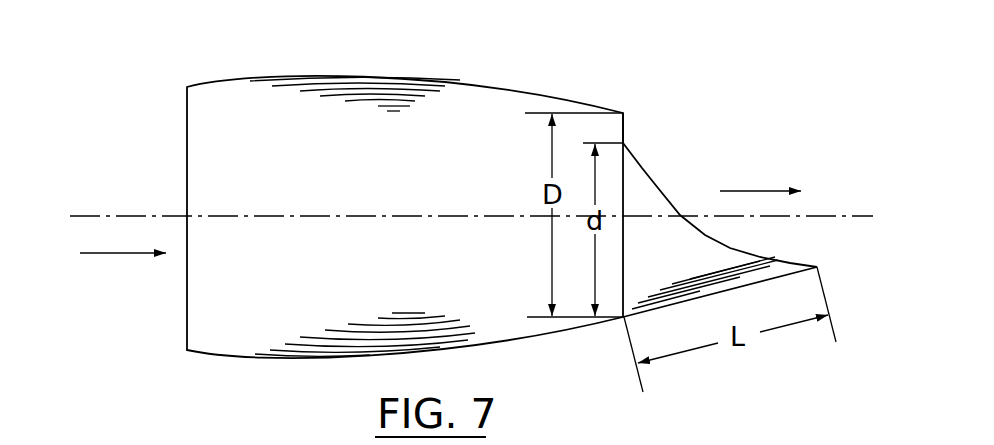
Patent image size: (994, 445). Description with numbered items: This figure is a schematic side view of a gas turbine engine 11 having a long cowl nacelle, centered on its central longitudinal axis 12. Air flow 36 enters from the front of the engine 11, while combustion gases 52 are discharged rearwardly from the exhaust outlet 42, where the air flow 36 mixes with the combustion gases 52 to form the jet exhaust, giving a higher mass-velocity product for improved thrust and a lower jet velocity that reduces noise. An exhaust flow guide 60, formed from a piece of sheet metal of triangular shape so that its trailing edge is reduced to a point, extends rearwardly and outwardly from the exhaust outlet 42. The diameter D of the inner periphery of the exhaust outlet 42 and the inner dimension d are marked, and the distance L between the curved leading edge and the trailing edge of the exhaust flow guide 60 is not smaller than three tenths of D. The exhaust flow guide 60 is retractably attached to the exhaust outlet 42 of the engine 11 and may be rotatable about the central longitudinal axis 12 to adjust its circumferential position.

The engine 11 is at (484, 70).
The central longitudinal axis 12 is at (840, 215).
The air flow 36 is at (120, 253).
The exhaust outlet 42 is at (625, 128).
The combustion gases 52 is at (766, 190).
The exhaust flow guide 60 is at (671, 198).